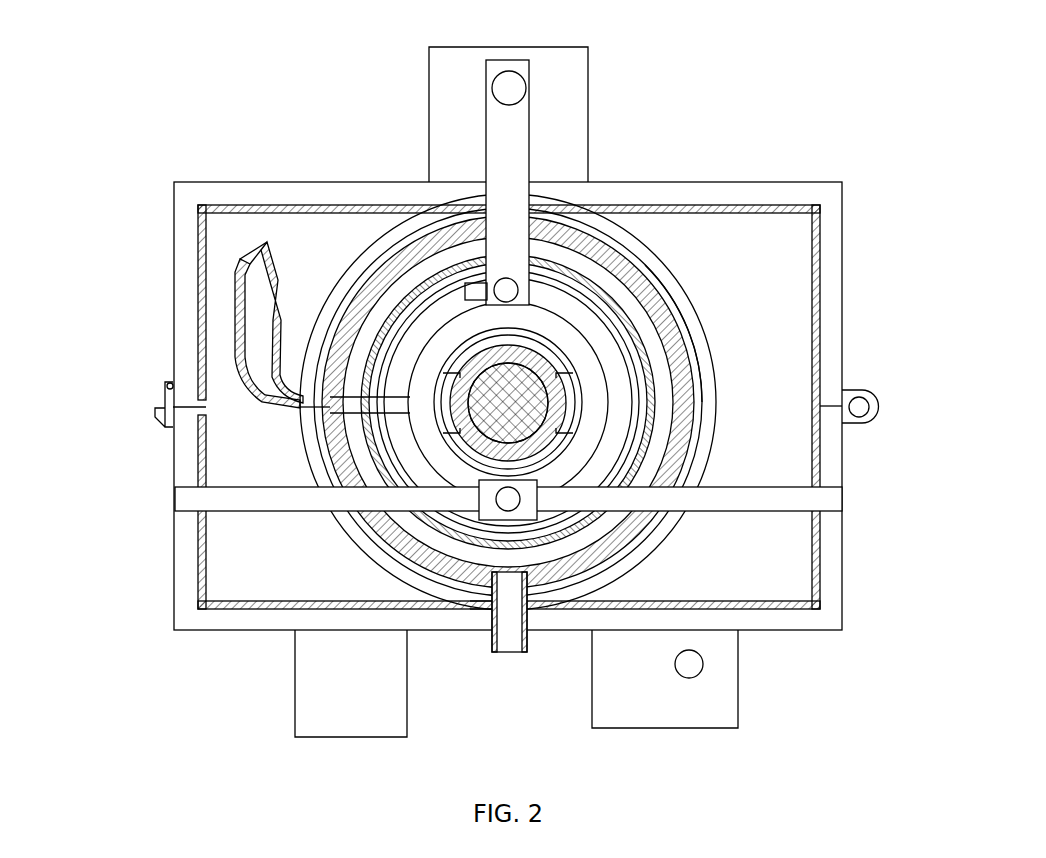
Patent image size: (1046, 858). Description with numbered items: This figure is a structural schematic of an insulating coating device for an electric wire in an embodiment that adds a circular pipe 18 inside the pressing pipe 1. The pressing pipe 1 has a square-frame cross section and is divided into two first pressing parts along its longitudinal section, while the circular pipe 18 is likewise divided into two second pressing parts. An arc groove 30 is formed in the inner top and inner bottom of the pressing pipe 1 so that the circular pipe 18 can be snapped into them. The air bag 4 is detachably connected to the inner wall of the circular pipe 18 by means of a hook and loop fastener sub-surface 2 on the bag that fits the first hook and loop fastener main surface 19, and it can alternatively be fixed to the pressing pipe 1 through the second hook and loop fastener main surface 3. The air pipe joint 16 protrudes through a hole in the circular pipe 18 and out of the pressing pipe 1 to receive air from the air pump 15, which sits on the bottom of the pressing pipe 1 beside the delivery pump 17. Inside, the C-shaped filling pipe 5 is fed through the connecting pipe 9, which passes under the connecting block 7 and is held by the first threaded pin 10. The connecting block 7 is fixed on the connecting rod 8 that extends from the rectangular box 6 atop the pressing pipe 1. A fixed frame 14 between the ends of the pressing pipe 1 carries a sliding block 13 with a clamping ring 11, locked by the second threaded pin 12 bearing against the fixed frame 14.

The pressing pipe 1 is at (843, 212).
The hook and loop fastener sub-surface 2 is at (835, 213).
The second hook and loop fastener main surface 3 is at (667, 290).
The air bag 4 is at (617, 293).
The filling pipe 5 is at (555, 300).
The rectangular box 6 is at (577, 130).
The connecting block 7 is at (520, 130).
The connecting rod 8 is at (512, 87).
The connecting pipe 9 is at (500, 282).
The first threaded pin 10 is at (474, 288).
The clamping ring 11 is at (442, 405).
The second threaded pin 12 is at (382, 440).
The sliding block 13 is at (485, 503).
The fixed frame 14 is at (207, 502).
The air pump 15 is at (373, 710).
The air pipe joint 16 is at (507, 645).
The delivery pump 17 is at (727, 708).
The circular pipe 18 is at (685, 325).
The first hook and loop fastener main surface 19 is at (693, 390).
The arc groove 30 is at (478, 605).